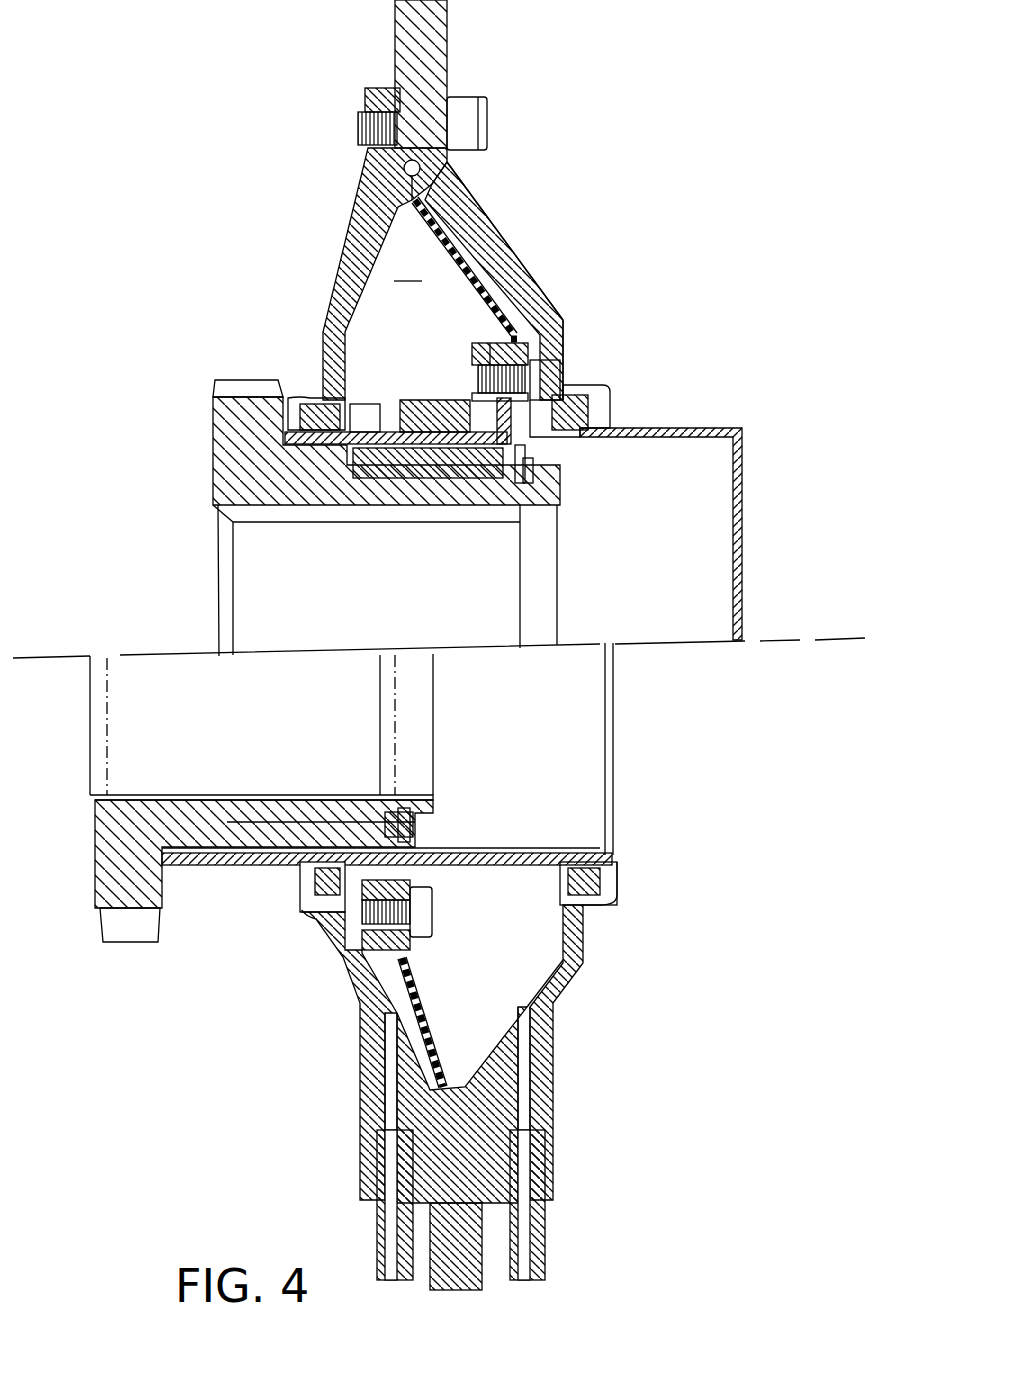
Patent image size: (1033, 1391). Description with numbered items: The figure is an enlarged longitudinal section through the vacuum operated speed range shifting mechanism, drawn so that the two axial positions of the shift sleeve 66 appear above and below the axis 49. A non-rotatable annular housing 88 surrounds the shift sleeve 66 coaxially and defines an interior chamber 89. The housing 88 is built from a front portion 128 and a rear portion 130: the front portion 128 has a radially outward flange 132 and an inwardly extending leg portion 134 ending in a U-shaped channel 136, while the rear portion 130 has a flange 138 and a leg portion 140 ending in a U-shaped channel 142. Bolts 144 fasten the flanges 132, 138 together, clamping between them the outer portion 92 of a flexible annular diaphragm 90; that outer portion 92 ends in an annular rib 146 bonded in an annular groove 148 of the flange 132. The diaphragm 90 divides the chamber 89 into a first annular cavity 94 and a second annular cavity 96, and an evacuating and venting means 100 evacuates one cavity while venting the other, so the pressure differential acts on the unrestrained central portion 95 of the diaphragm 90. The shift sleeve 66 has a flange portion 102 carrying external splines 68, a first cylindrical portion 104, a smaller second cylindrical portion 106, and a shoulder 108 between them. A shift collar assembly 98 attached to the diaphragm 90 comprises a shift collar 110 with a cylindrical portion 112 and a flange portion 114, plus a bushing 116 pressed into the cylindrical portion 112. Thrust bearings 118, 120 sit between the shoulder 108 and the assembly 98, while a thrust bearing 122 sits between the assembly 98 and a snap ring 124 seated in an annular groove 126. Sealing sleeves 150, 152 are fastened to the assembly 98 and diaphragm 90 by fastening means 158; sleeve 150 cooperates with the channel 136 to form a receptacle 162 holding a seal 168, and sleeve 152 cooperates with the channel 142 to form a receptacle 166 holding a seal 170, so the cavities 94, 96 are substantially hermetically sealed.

The axis 49 is at (62, 656).
The shift sleeve 66 is at (222, 462).
The external splines 68 is at (250, 380).
The annular housing 88 is at (460, 52).
The interior chamber 89 is at (332, 340).
The flexible annular diaphragm 90 is at (542, 302).
The outer portion of diaphragm 92 is at (442, 200).
The first annular cavity 94 is at (407, 268).
The unrestrained central portion of diaphragm 95 is at (378, 248).
The second annular cavity 96 is at (522, 248).
The shift collar assembly 98 is at (258, 882).
The evacuating and venting means 100 is at (578, 1234).
The flange portion of shift sleeve 102 is at (213, 412).
The first cylindrical portion of shift sleeve 104 is at (327, 502).
The second cylindrical portion of shift sleeve 106 is at (458, 505).
The shoulder 108 is at (352, 430).
The shift collar 110 is at (470, 395).
The cylindrical portion of shift collar 112 is at (425, 480).
The flange portion of shift collar 114 is at (532, 462).
The bushing 116 is at (487, 478).
The thrust bearing 118 is at (150, 830).
The thrust bearing 120 is at (248, 835).
The thrust bearing 122 is at (432, 864).
The snap ring 124 is at (418, 830).
The annular groove 126 is at (412, 822).
The front portion of housing 128 is at (346, 256).
The rear portion of housing 130 is at (525, 242).
The radially outward flange of front portion 132 is at (366, 160).
The leg portion of front portion 134 is at (330, 300).
The U-shaped channel of front portion 136 is at (300, 385).
The radially outward flange of rear portion 138 is at (450, 162).
The leg portion of rear portion 140 is at (570, 332).
The U-shaped channel of rear portion 142 is at (608, 402).
The bolts 144 is at (460, 100).
The annular rib 146 is at (388, 152).
The annular groove 148 is at (422, 170).
The sealing sleeve 150 is at (396, 430).
The sealing sleeve 152 is at (702, 428).
The fastening means 158 is at (458, 337).
The inner annular receptacle 162 is at (298, 416).
The inner annular receptacle 166 is at (582, 422).
The seal 168 is at (322, 474).
The seal 170 is at (565, 372).